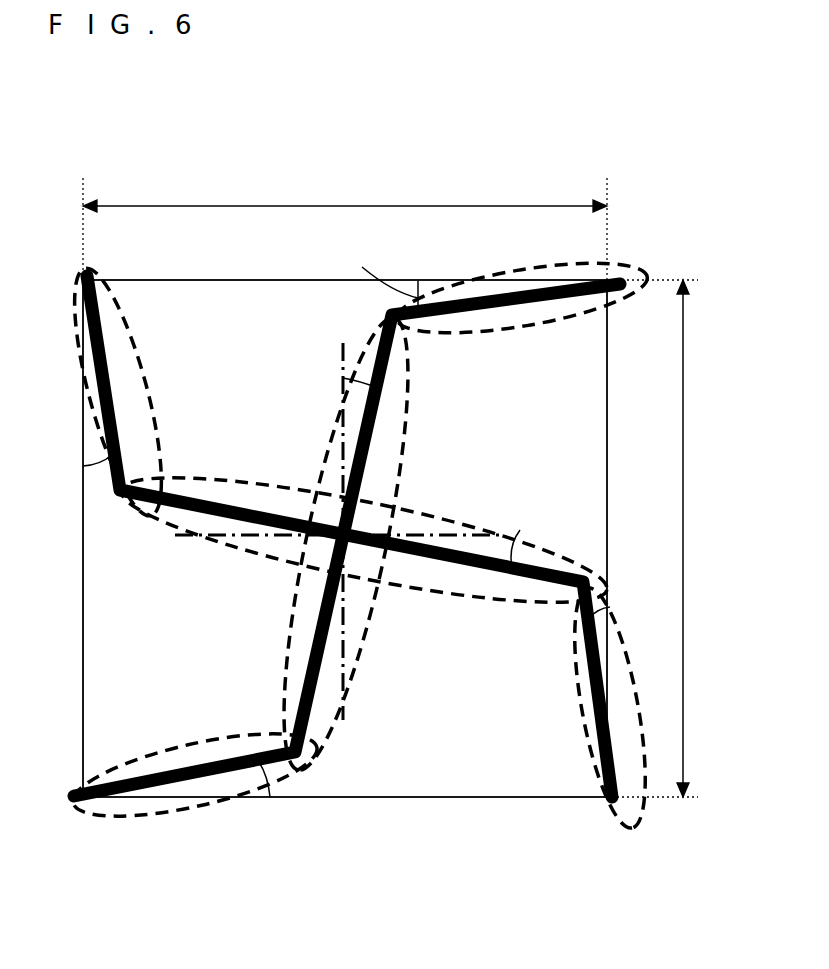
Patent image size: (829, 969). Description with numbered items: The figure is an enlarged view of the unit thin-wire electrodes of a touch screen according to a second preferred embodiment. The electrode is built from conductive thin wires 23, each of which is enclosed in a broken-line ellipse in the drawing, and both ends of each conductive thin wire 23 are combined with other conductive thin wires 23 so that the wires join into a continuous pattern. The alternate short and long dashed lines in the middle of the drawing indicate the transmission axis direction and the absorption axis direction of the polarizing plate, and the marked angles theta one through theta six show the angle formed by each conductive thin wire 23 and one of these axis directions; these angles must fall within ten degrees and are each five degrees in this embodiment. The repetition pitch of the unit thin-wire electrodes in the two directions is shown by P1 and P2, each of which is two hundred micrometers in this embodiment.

The conductive thin wire 23 is at (588, 735).
The repetition pitch P1 is at (345, 192).
The repetition pitch P2 is at (702, 538).